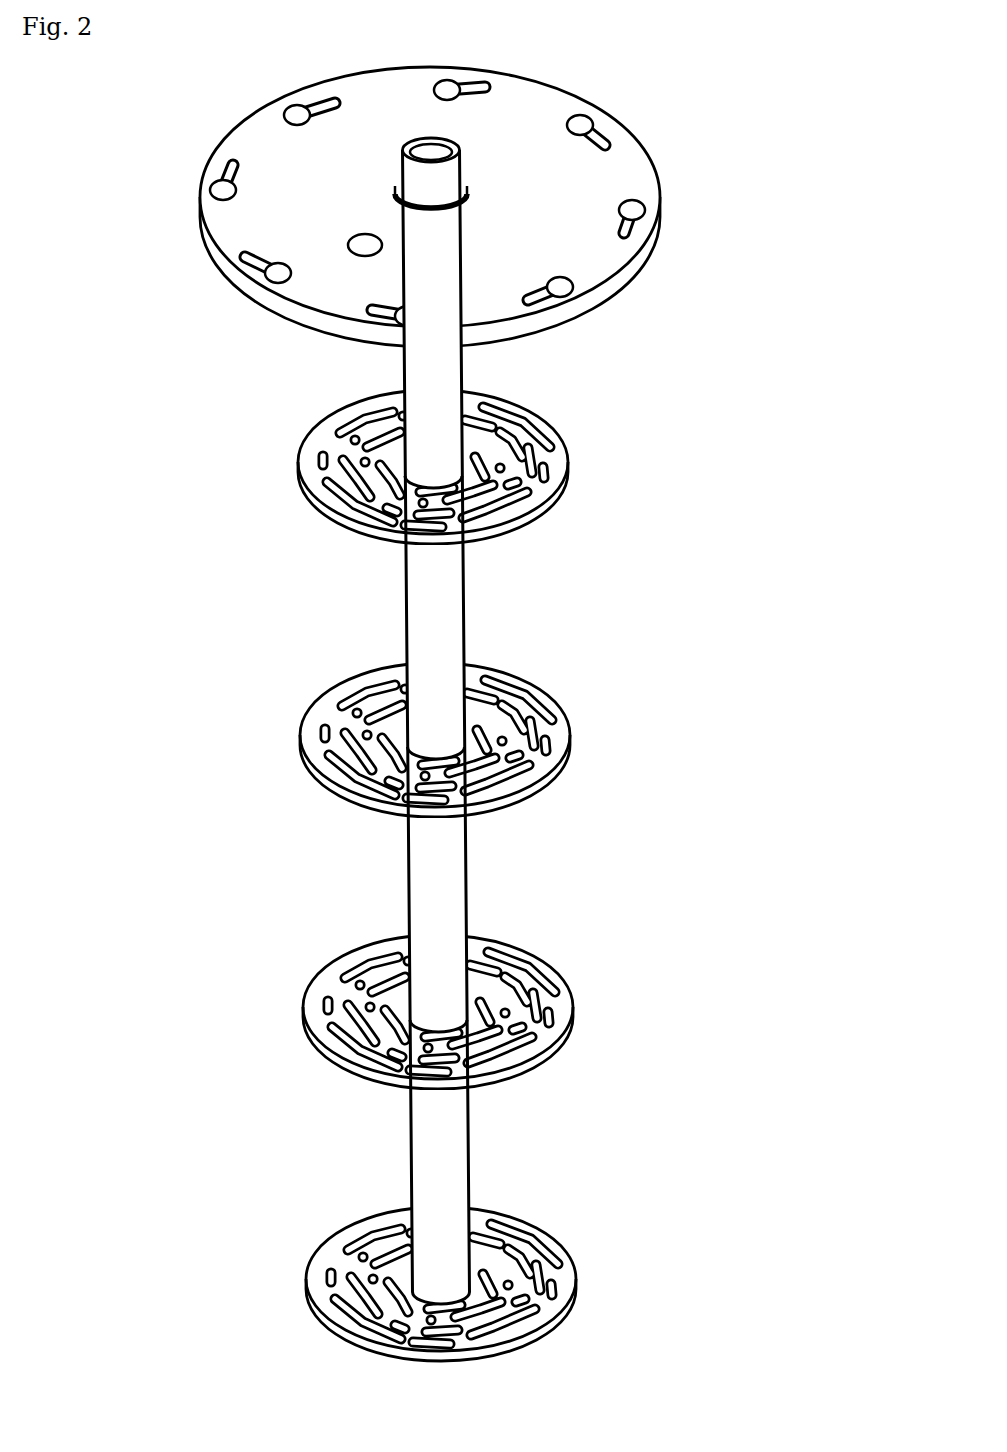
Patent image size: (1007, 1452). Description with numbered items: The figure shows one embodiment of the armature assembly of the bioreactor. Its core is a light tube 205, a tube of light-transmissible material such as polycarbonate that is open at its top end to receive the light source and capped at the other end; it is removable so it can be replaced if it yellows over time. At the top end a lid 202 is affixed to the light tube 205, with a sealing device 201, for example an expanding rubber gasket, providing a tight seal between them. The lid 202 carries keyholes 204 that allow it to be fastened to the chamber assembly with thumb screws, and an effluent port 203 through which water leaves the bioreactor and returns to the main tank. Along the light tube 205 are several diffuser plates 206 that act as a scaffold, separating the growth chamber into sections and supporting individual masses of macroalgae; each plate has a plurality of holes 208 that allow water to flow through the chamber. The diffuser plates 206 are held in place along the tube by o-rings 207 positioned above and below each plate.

The sealing device 201 is at (374, 180).
The lid 202 is at (496, 212).
The effluent port 203 is at (332, 265).
The keyholes 204 is at (587, 285).
The light tube 205 is at (408, 679).
The diffuser plates 206 is at (457, 875).
The o-rings 207 is at (439, 461).
The holes 208 is at (315, 429).